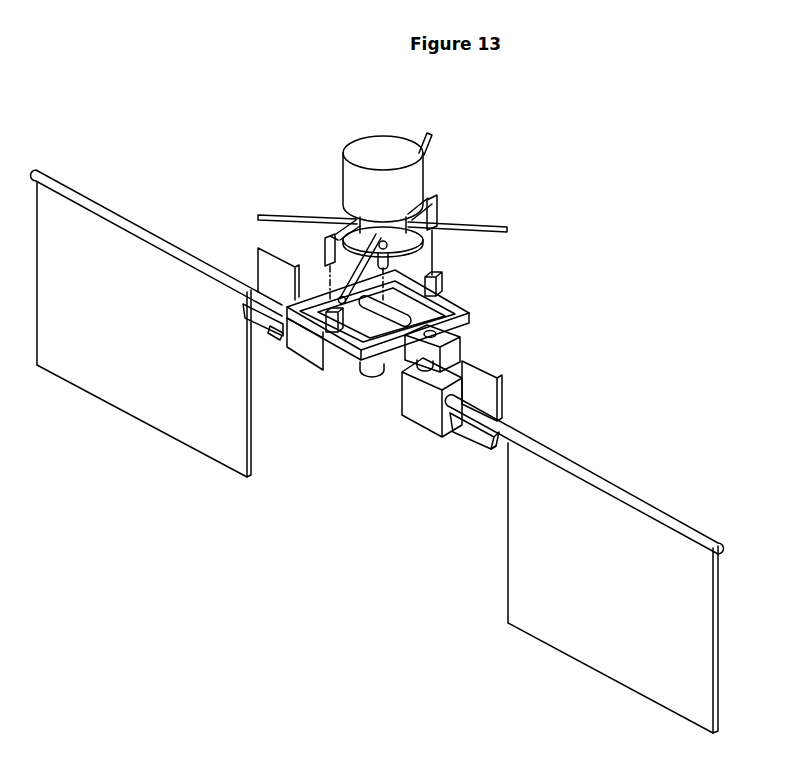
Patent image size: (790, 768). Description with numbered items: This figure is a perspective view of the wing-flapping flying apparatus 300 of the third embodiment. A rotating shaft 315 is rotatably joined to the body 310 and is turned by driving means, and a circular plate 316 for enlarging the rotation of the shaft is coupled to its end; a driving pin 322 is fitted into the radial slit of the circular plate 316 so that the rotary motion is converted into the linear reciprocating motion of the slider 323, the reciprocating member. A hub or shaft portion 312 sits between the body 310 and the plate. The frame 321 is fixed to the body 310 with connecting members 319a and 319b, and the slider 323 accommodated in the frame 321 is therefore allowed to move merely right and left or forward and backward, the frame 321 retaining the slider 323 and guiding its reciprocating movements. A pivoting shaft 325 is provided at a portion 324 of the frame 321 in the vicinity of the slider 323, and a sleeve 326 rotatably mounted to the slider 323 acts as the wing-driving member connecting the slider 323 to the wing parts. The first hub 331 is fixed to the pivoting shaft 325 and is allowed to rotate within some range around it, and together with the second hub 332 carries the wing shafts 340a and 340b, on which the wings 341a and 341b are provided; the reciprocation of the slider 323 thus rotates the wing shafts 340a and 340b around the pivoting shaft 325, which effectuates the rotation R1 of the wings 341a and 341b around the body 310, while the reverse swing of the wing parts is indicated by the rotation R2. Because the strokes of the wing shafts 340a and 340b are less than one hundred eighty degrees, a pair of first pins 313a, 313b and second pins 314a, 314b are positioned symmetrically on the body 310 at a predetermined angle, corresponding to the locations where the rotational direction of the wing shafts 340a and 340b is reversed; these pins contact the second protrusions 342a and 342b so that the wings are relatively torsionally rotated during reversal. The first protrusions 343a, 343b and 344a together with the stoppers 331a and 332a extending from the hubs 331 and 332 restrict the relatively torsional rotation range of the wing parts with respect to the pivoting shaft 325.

The wing-flapping flying apparatus 300 is at (707, 130).
The body 310 is at (383, 146).
The motor shaft hub 312 is at (358, 218).
The first pin 313a is at (497, 226).
The first pin 313b is at (347, 304).
The second pin 314a is at (430, 134).
The second pin 314b is at (259, 217).
The rotating shaft 315 is at (440, 256).
The circular plate 316 is at (428, 236).
The connecting member 319a is at (413, 215).
The connecting member 319b is at (323, 250).
The frame 321 is at (458, 303).
The driving pin 322 is at (437, 280).
The slider 323 is at (470, 319).
The portion of the frame 324 is at (445, 345).
The pivoting shaft 325 is at (427, 378).
The sleeve 326 is at (372, 372).
The first hub 331 is at (420, 420).
The stopper 331a is at (494, 455).
The second hub 332 is at (318, 364).
The stopper 332a is at (272, 335).
The wing shaft 340a is at (622, 488).
The wing shaft 340b is at (75, 192).
The wing 341a is at (597, 657).
The wing 341b is at (85, 372).
The second protrusion 342a is at (497, 392).
The second protrusion 342b is at (268, 272).
The first protrusion 343a is at (480, 438).
The first protrusion 343b is at (247, 325).
The first protrusion 344a is at (505, 428).
The rotation R1 is at (452, 454).
The rotation direction R2 is at (707, 549).